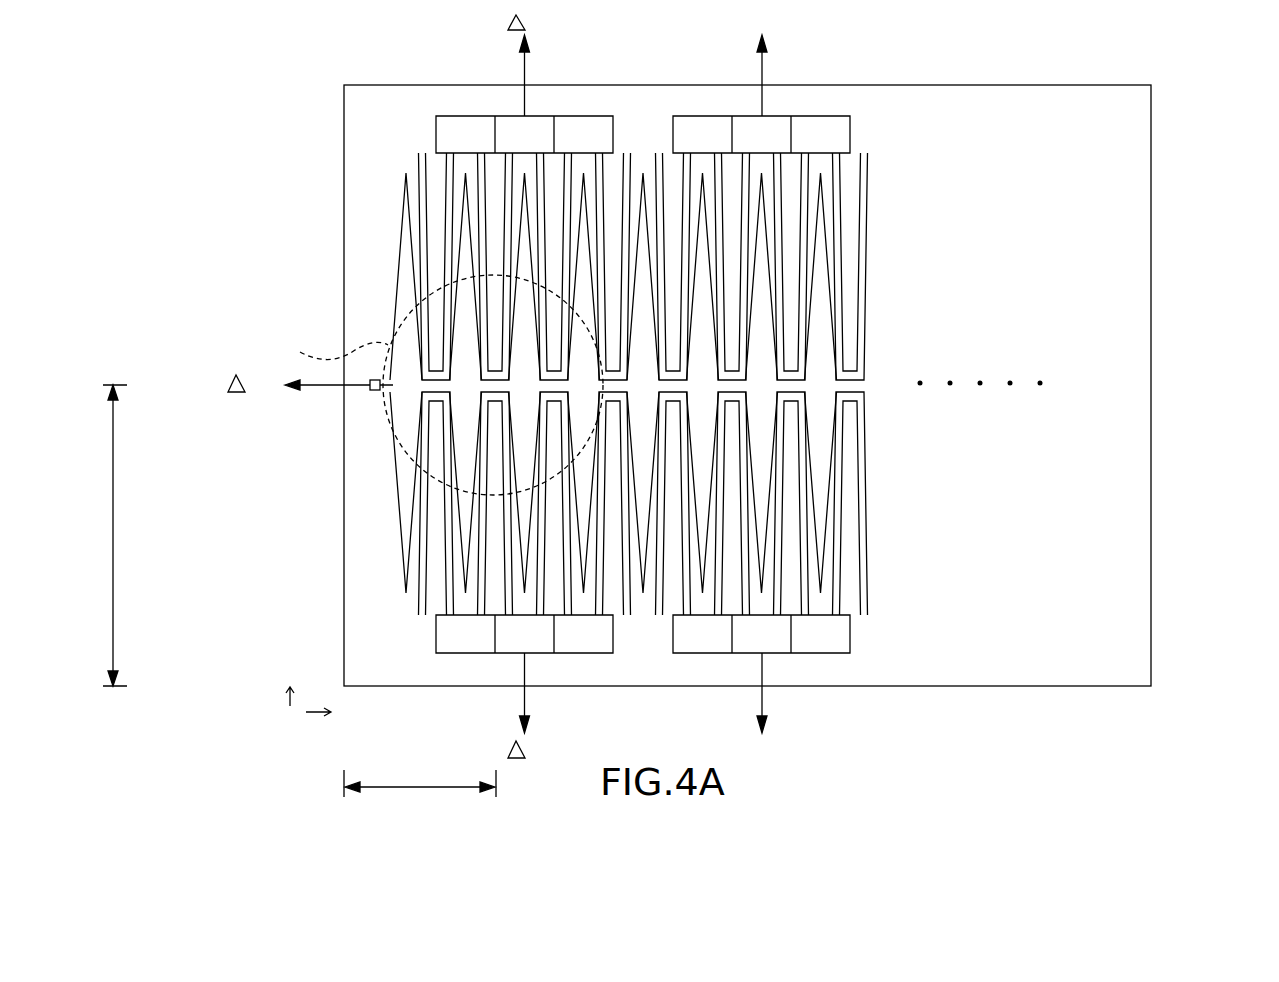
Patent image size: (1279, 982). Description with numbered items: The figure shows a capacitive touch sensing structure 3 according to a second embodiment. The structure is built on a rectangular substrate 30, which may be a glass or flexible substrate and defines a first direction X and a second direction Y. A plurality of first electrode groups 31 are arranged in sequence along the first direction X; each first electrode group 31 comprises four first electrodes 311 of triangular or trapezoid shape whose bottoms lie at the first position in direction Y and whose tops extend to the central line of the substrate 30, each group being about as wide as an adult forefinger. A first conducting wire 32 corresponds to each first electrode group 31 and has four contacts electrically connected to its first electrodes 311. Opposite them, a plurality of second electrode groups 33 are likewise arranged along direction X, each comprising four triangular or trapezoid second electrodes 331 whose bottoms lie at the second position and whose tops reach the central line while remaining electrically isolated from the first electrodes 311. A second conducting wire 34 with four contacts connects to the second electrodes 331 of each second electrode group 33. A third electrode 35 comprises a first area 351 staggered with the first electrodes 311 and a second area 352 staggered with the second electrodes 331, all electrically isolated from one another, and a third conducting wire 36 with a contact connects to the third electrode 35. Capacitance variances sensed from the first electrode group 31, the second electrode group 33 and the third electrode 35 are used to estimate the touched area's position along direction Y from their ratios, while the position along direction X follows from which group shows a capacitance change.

The capacitive touch sensing structure 3 is at (1214, 141).
The substrate 30 is at (1152, 350).
The first electrode group 31 is at (434, 598).
The first electrode 311 is at (433, 640).
The first conducting wire 32 is at (522, 708).
The second electrode group 33 is at (434, 180).
The second electrode 331 is at (430, 180).
The second conducting wire 34 is at (522, 66).
The third electrode 35 is at (200, 278).
The first area 351 is at (404, 466).
The second area 352 is at (404, 283).
The third conducting wire 36 is at (322, 388).